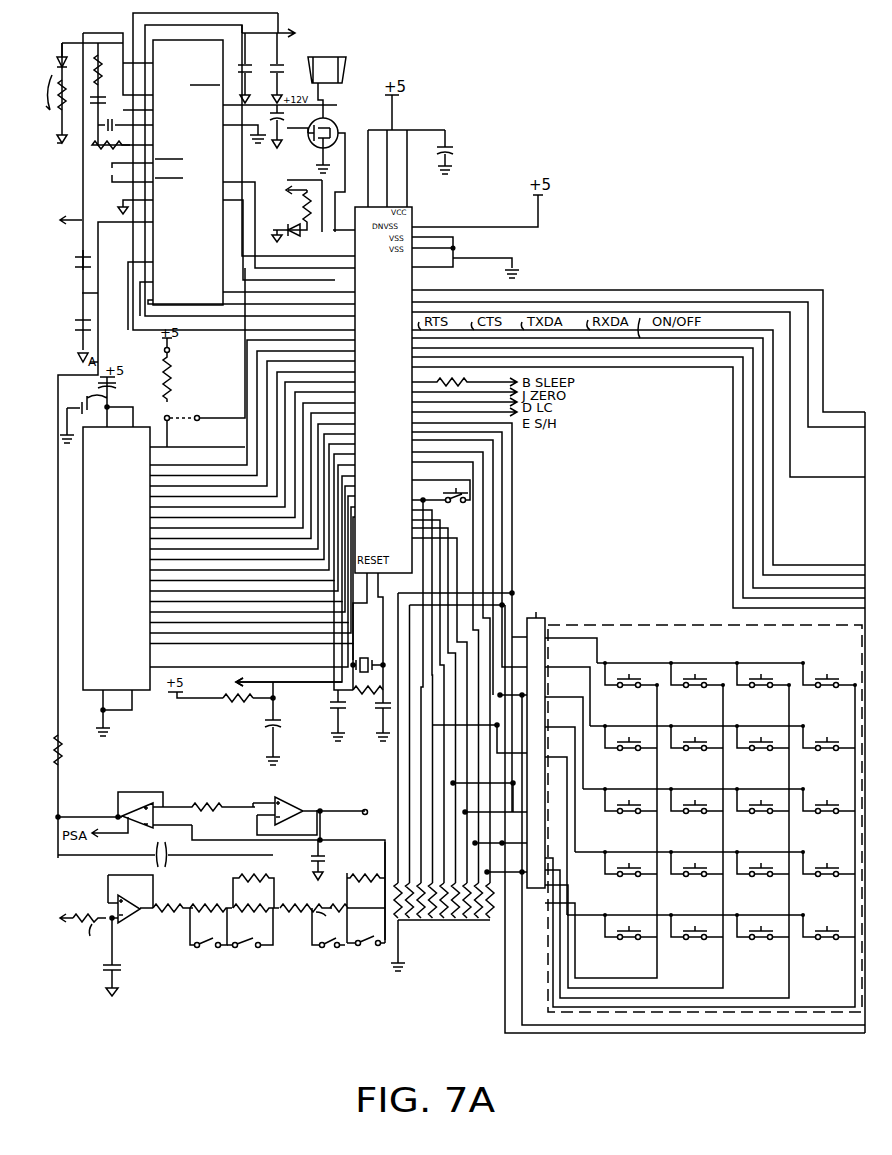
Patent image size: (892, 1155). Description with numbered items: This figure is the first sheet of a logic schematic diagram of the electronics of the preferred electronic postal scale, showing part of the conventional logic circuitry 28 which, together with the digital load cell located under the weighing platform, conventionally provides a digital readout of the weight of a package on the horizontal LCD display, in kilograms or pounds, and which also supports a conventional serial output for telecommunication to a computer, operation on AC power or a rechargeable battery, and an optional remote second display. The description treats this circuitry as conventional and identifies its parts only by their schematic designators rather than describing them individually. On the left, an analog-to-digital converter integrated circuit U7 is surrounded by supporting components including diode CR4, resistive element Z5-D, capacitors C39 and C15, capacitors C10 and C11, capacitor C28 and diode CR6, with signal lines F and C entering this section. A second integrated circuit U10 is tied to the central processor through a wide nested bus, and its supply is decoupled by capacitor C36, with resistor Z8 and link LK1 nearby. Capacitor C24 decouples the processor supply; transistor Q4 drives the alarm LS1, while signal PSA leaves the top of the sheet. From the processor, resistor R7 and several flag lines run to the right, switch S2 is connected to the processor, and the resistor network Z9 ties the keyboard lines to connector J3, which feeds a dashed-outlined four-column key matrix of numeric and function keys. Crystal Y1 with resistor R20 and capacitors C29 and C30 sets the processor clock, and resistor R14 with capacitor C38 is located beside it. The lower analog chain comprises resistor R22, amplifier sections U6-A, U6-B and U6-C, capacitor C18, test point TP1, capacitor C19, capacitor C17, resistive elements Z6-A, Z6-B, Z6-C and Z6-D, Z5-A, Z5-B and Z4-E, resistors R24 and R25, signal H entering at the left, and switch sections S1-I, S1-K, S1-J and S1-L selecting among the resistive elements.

The logic circuitry 28 is at (648, 188).
The analog-to-digital converter U7 is at (214, 223).
The latch U10 is at (123, 467).
The keyboard connector J3 is at (533, 737).
The resistor network Z9 is at (442, 927).
The switch S2 is at (441, 491).
The resistor R7 is at (460, 383).
The capacitor C24 is at (452, 152).
The transistor Q4 is at (330, 126).
The alarm speaker LS1 is at (328, 54).
The capacitor C10 is at (258, 63).
The capacitor C11 is at (291, 68).
The capacitor C28 is at (292, 125).
The diode CR6 is at (278, 226).
The diode CR4 is at (62, 48).
The resistor Z5-D is at (62, 137).
The capacitor C39 is at (90, 268).
The capacitor C15 is at (94, 326).
The capacitor C36 is at (117, 392).
The resistor Z8 is at (171, 379).
The link LK1 is at (197, 357).
The crystal Y1 is at (362, 658).
The resistor R14 is at (239, 704).
The capacitor C38 is at (266, 742).
The capacitor C29 is at (334, 706).
The resistor R20 is at (333, 732).
The capacitor C30 is at (366, 735).
The resistor R22 is at (73, 754).
The operational amplifier U6-A is at (132, 791).
The operational amplifier U6-B is at (288, 800).
The operational amplifier U6-C is at (138, 921).
The capacitor C18 is at (162, 844).
The test point TP1 is at (359, 825).
The capacitor C19 is at (314, 861).
The capacitor C17 is at (123, 973).
The resistor Z6-A is at (234, 876).
The resistor Z6-B is at (256, 900).
The resistor Z6-C is at (361, 868).
The resistor Z6-D is at (357, 908).
The resistor Z5-A is at (211, 900).
The resistor Z5-B is at (306, 902).
The resistor Z4-E is at (86, 936).
The resistor R24 is at (173, 900).
The resistor R25 is at (283, 926).
The switch S1-I is at (215, 946).
The switch S1-K is at (254, 950).
The switch S1-J is at (326, 954).
The switch S1-L is at (372, 958).
The power supply signal PSA is at (309, 32).
The signal F is at (67, 220).
The signal H is at (66, 909).
The signal C is at (287, 190).